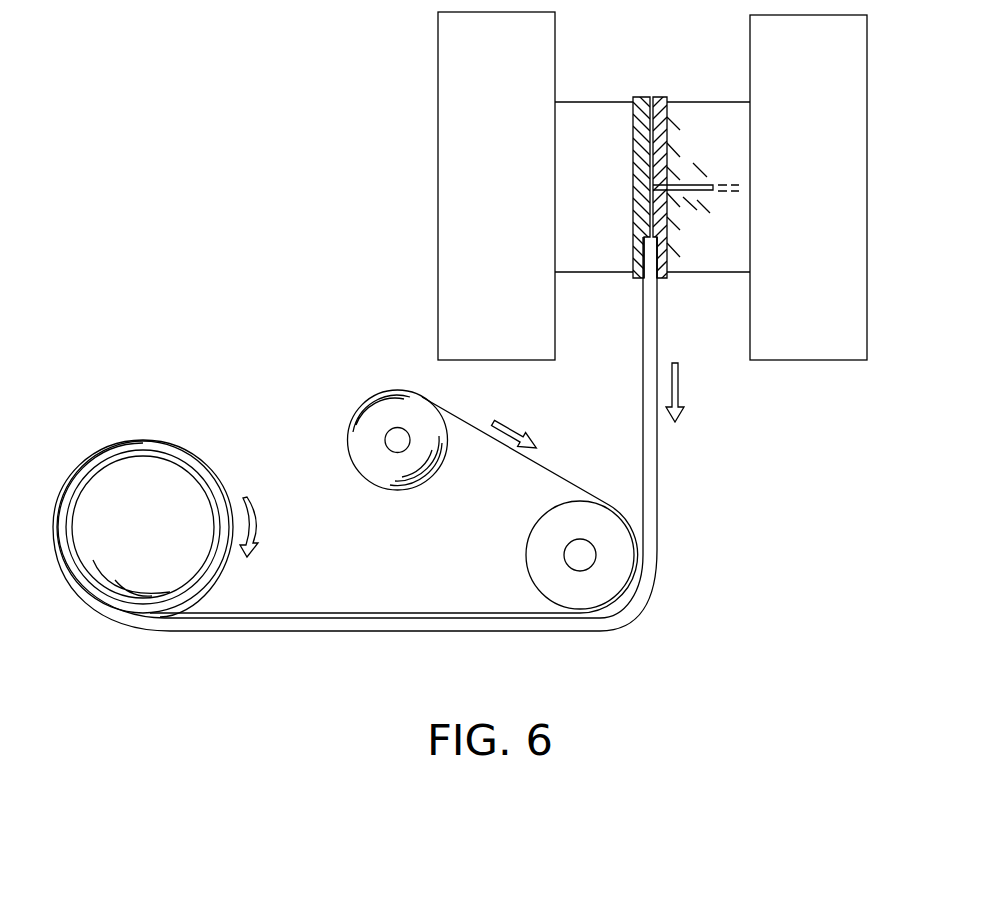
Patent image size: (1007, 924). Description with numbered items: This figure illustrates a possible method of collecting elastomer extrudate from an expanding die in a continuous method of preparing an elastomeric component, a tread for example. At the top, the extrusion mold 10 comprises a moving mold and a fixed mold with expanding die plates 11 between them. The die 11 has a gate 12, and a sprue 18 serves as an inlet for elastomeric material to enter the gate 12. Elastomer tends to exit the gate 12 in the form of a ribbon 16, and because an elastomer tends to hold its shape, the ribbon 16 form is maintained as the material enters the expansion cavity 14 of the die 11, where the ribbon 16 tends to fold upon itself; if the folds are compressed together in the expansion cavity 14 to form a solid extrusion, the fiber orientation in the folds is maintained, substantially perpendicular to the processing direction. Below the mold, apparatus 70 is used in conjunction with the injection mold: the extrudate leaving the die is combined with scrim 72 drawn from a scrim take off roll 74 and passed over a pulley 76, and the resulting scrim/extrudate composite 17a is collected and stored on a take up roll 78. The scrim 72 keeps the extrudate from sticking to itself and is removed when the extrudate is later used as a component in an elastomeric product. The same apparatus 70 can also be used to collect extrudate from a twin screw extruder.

The extrusion mold 10 is at (416, 178).
The die 11 is at (651, 97).
The gate 12 is at (643, 202).
The expansion cavity 14 is at (640, 250).
The ribbon 16 is at (651, 333).
The sprue 18 is at (685, 182).
The apparatus 70 is at (248, 656).
The scrim 72 is at (548, 467).
The scrim take off roll 74 is at (367, 427).
The pulley 76 is at (538, 553).
The take up roll 78 is at (152, 475).
The scrim/extrudate composite 17a is at (368, 633).